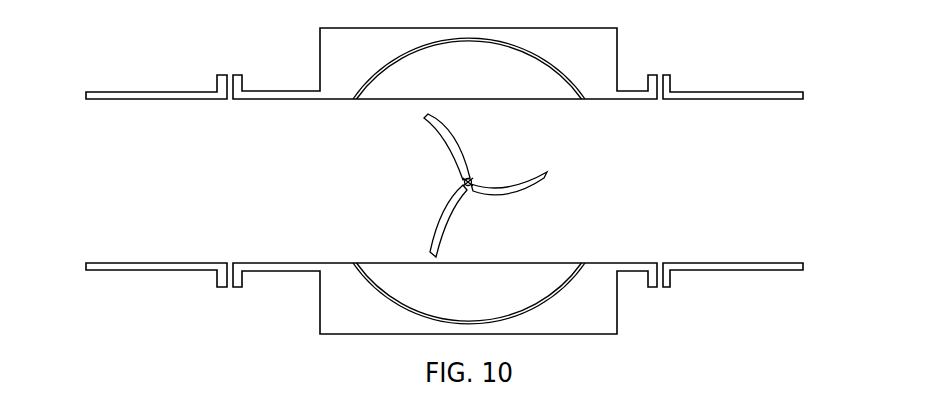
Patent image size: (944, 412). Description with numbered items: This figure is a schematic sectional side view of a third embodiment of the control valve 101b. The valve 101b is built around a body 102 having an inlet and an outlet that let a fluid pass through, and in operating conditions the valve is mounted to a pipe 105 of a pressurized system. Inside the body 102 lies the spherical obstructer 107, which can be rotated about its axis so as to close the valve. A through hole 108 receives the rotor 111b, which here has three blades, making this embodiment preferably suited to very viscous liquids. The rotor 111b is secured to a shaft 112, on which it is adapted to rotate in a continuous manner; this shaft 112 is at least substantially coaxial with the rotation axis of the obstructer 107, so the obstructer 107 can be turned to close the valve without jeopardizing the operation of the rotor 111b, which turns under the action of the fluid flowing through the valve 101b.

The valve 101b is at (631, 76).
The obstructer 107 is at (412, 78).
The body 102 is at (341, 297).
The pipe 105 is at (152, 271).
The through hole 108 is at (615, 233).
The rotor 111b is at (497, 182).
The shaft 112 is at (483, 192).